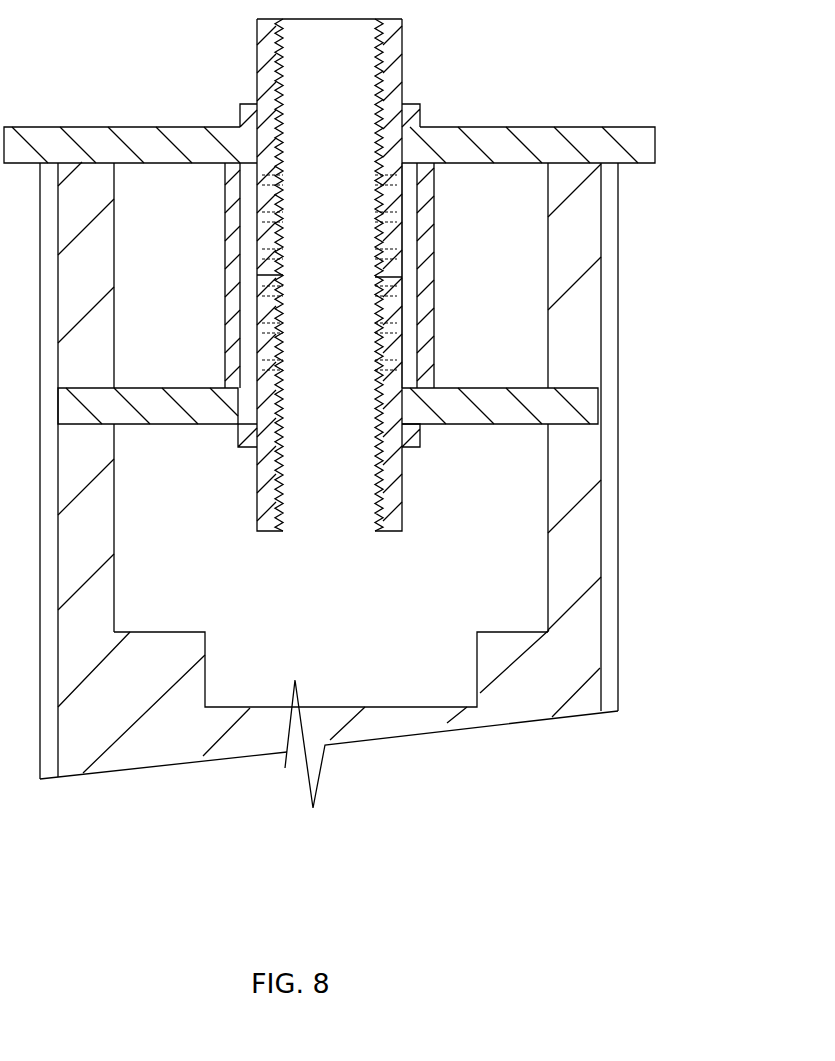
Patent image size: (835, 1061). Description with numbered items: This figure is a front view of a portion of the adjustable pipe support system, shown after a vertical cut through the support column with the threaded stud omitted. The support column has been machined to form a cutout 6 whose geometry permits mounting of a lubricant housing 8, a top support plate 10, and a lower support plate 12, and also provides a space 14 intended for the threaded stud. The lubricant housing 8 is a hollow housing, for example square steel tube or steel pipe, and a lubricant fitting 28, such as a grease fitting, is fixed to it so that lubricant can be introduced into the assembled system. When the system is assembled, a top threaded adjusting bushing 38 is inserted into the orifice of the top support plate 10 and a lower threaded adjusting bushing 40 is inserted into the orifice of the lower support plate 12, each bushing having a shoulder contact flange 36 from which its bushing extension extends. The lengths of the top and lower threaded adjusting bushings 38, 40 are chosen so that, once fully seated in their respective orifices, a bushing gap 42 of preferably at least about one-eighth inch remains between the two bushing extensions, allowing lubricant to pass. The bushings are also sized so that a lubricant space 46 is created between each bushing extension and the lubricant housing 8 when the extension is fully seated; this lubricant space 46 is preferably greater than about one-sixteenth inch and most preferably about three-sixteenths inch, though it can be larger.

The cutout 6 is at (513, 550).
The lubricant housing 8 is at (230, 212).
The top support plate 10 is at (660, 144).
The lower support plate 12 is at (590, 407).
The space 14 is at (440, 673).
The lubricant fitting 28 is at (437, 275).
The shoulder contact flange 36 is at (420, 117).
The top threaded adjusting bushing 38 is at (407, 42).
The lower threaded adjusting bushing 40 is at (402, 483).
The bushing gap 42 is at (260, 276).
The lubricant space 46 is at (412, 194).